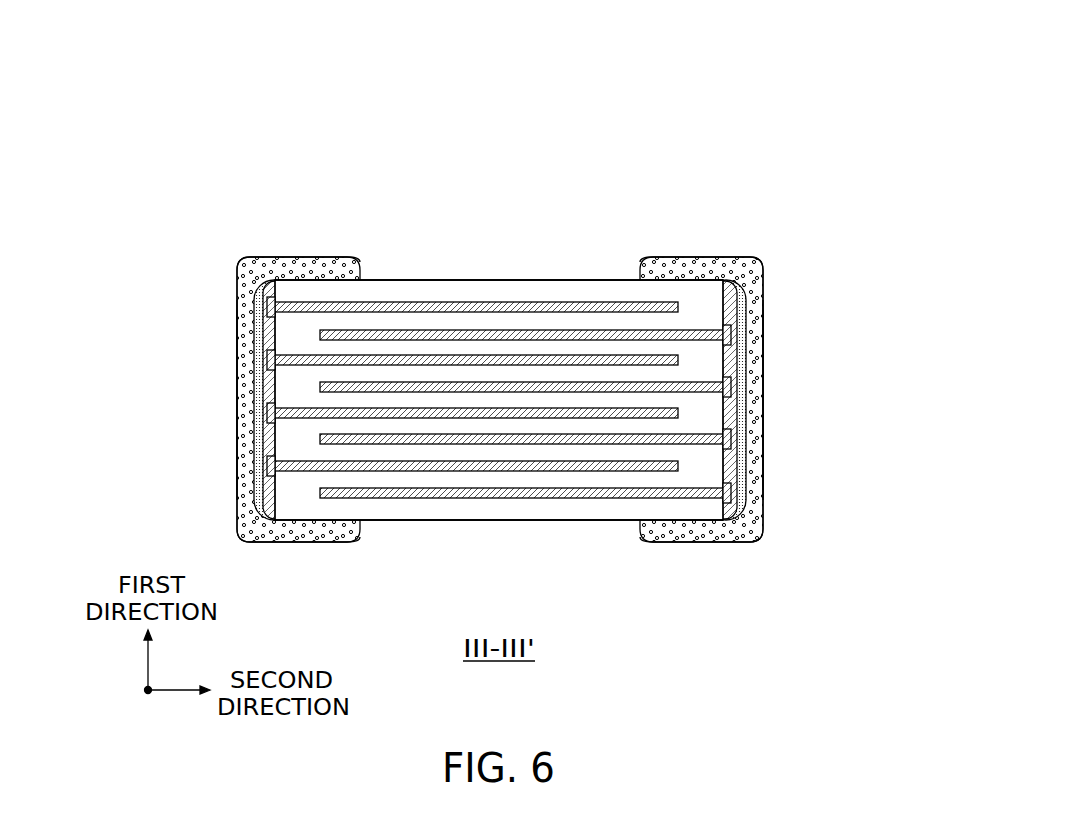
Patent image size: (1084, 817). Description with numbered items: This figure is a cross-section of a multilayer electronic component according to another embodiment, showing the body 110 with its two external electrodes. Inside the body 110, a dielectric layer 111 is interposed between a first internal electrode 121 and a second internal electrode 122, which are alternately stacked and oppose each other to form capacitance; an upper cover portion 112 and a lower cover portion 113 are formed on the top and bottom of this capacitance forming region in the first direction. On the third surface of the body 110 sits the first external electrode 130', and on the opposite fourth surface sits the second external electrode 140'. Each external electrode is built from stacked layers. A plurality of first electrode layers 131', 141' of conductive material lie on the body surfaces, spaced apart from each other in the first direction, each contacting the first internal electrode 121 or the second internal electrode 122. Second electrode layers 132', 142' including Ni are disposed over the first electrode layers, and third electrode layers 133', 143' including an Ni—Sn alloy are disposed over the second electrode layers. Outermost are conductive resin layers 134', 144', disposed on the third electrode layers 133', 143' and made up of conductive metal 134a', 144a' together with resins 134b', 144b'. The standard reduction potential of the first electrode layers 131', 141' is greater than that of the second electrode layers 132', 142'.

The body 110 is at (370, 280).
The dielectric layer 111 is at (568, 318).
The upper cover portion 112 is at (503, 290).
The lower cover portion 113 is at (413, 508).
The first internal electrode 121 is at (440, 301).
The second internal electrode 122 is at (638, 333).
The first external electrode 130' is at (221, 276).
The first electrode layers 131' is at (225, 400).
The second electrode layer 132' is at (226, 400).
The third electrode layer 133' is at (259, 399).
The conductive resin layer 134' is at (221, 399).
The conductive metal 134a' is at (195, 400).
The resin 134b' is at (194, 400).
The second external electrode 140' is at (779, 276).
The first electrode layers 141' is at (748, 400).
The second electrode layer 142' is at (772, 400).
The third electrode layer 143' is at (739, 399).
The conductive resin layer 144' is at (779, 399).
The conductive metal 144a' is at (804, 400).
The resin 144b' is at (804, 400).